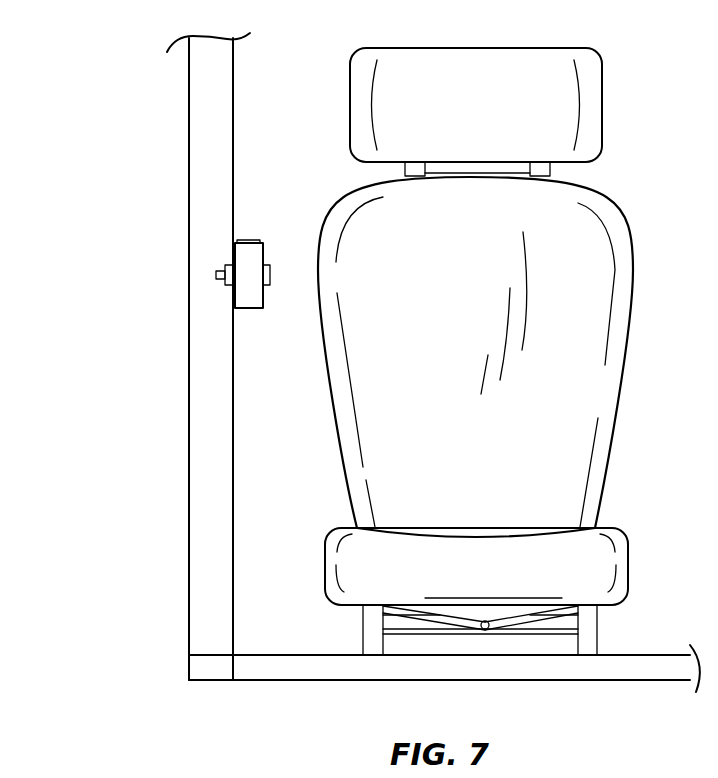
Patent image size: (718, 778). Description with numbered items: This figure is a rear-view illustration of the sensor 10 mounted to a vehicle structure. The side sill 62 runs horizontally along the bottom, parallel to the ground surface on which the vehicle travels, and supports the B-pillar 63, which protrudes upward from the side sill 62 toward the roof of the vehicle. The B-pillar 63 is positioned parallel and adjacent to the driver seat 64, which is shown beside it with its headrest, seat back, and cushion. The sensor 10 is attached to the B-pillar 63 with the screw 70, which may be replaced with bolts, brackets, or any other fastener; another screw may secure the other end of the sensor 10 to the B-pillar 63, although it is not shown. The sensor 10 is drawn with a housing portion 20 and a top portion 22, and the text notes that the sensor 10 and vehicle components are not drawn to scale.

The sensor 10 is at (220, 240).
The sensor housing 20 is at (241, 310).
The sensor top portion 22 is at (240, 240).
The side sill 62 is at (189, 660).
The B-pillar 63 is at (189, 368).
The driver seat 64 is at (613, 202).
The screw 70 is at (270, 275).